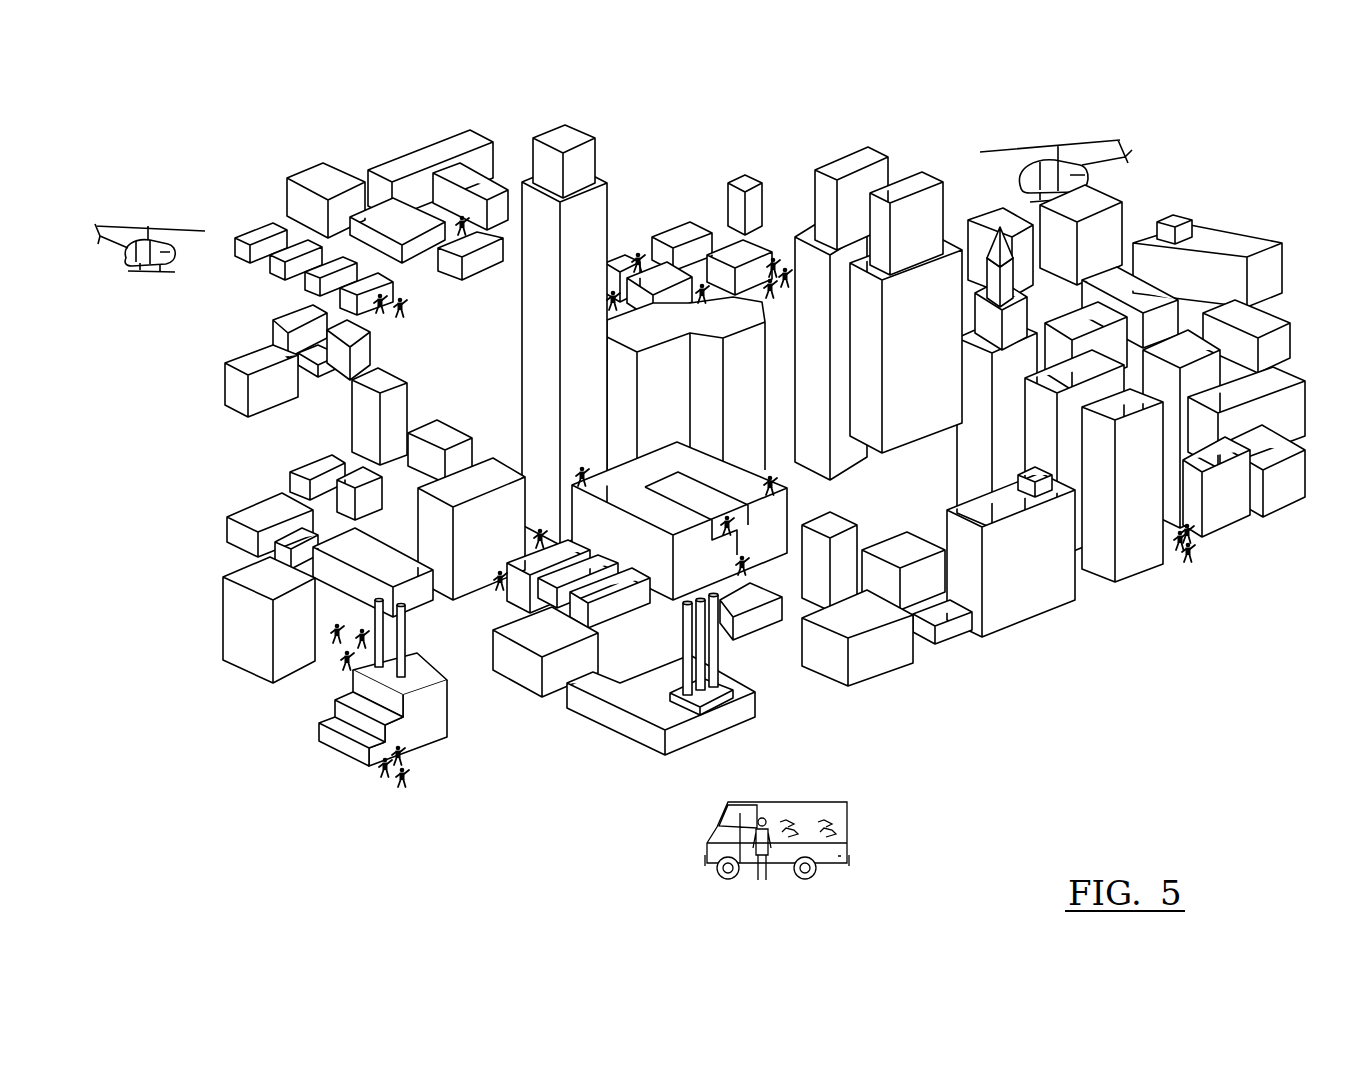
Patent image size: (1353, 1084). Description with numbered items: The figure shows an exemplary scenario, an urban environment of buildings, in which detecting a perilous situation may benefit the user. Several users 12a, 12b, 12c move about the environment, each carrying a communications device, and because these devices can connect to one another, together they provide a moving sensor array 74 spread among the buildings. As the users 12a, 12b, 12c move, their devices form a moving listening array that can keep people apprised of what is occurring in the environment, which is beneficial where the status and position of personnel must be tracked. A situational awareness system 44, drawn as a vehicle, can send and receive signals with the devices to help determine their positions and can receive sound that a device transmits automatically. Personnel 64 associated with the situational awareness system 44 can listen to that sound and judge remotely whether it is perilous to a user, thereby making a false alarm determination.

The moving sensor array 74 is at (775, 262).
The user 12a is at (404, 796).
The user 12b is at (398, 755).
The user 12c is at (402, 777).
The situational awareness system 44 is at (853, 835).
The personnel 64 is at (766, 874).